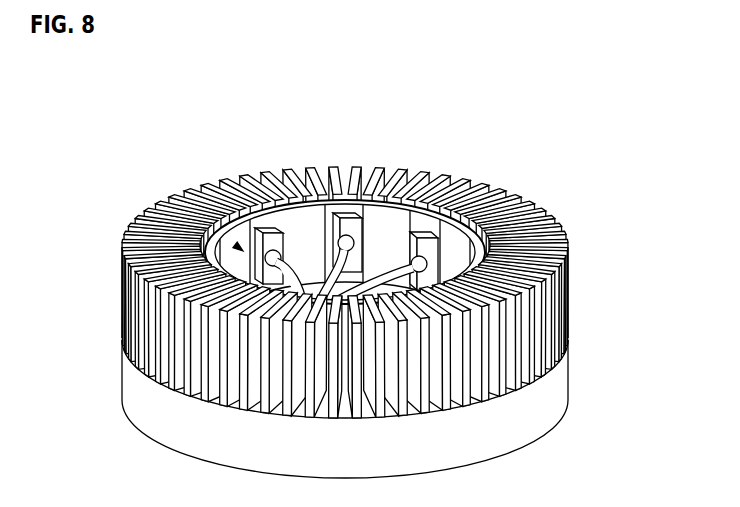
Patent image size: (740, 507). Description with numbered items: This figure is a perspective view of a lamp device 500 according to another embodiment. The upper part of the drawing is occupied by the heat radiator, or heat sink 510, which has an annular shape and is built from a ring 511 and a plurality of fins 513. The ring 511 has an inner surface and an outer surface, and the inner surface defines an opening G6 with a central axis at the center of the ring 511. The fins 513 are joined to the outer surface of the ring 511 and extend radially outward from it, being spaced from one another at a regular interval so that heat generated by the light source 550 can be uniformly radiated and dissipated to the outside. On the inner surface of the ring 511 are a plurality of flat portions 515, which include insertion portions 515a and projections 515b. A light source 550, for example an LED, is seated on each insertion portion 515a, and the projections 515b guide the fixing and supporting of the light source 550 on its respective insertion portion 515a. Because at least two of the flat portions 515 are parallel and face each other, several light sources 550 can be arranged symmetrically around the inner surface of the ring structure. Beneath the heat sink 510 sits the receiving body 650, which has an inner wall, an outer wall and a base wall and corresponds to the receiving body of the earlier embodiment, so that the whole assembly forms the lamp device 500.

The lamp device 500 is at (95, 107).
The heat sink 510 is at (345, 252).
The ring 511 is at (522, 227).
The fins 513 is at (560, 262).
The flat portions 515 is at (315, 239).
The insertion portions 515a is at (352, 207).
The projections 515b is at (393, 217).
The light source 550 is at (425, 243).
The receiving body 650 is at (543, 400).
The opening G6 is at (236, 246).